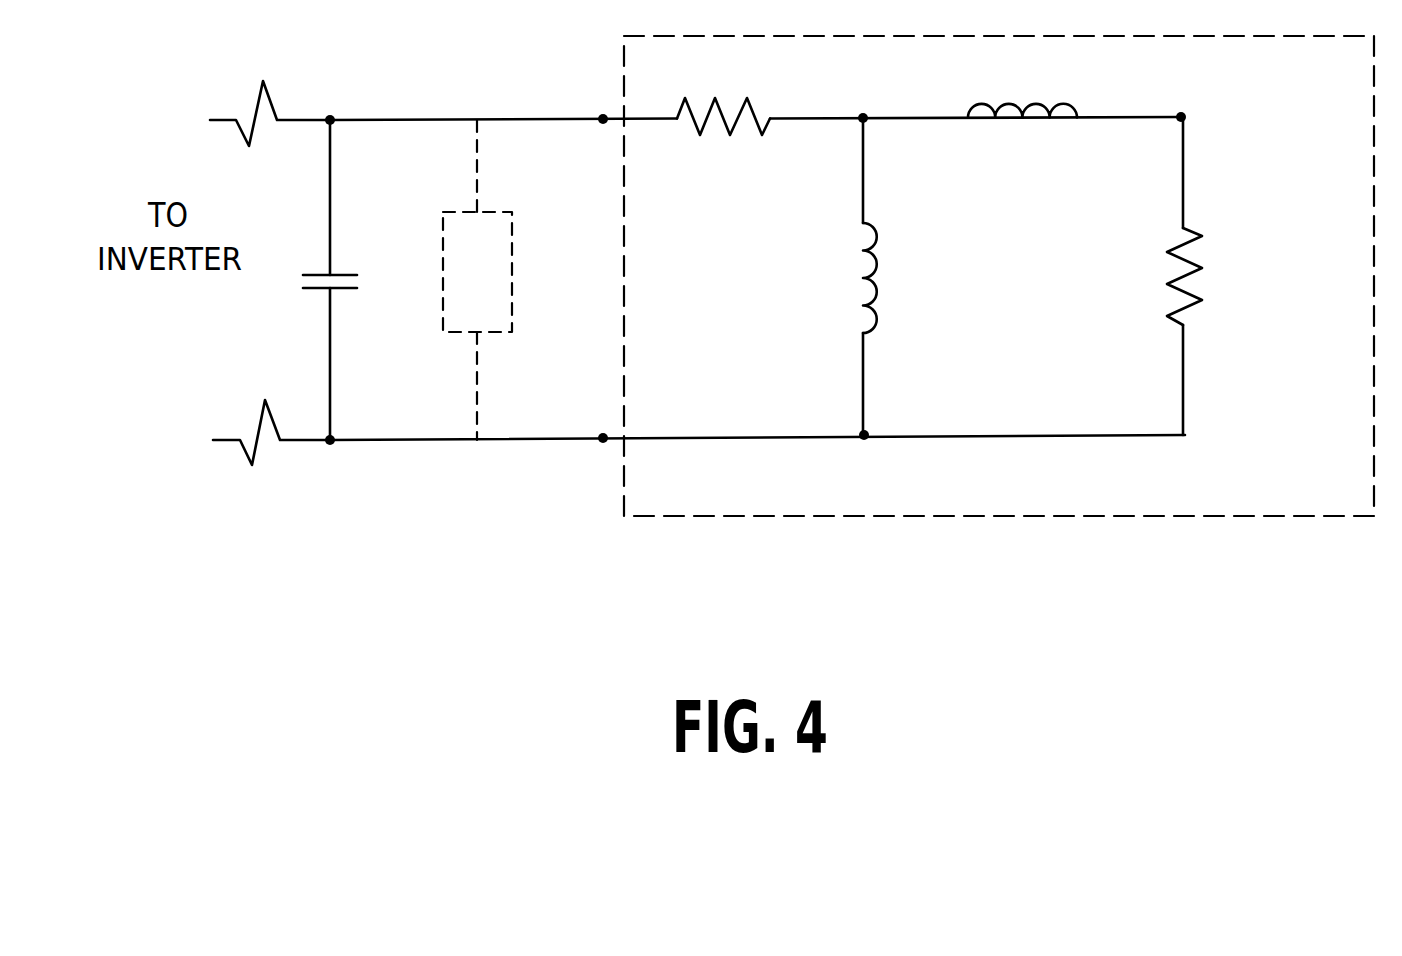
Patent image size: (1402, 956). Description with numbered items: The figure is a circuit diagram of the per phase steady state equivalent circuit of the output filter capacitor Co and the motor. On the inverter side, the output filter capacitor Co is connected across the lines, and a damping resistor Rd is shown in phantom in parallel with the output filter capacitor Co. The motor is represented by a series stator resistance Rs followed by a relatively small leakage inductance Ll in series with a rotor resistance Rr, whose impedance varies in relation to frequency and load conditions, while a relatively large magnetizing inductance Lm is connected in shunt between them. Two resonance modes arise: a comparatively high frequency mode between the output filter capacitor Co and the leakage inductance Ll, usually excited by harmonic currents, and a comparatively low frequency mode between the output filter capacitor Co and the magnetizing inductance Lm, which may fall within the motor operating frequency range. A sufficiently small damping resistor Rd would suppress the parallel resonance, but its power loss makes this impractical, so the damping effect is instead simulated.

The output filter capacitor Co is at (343, 280).
The damping resistor Rd is at (493, 280).
The stator resistance Rs is at (723, 92).
The leakage inductance Ll is at (1022, 83).
The magnetizing inductance Lm is at (836, 277).
The rotor resistance Rr is at (1322, 277).